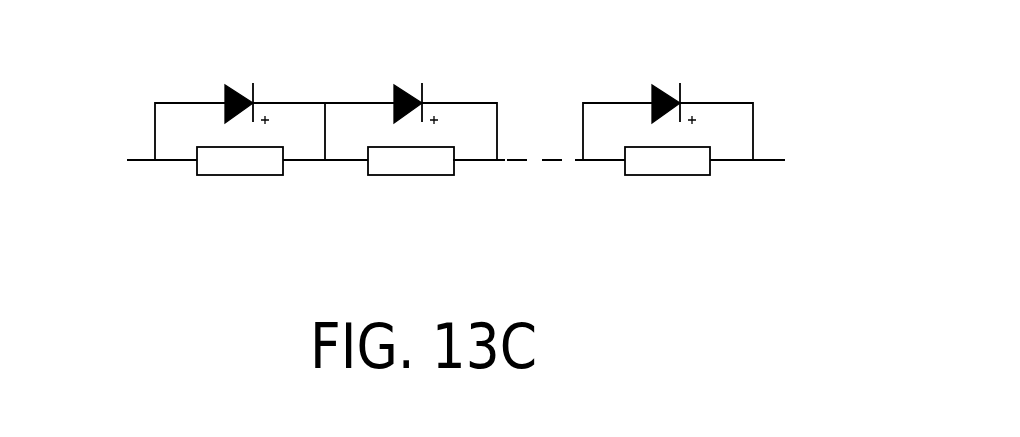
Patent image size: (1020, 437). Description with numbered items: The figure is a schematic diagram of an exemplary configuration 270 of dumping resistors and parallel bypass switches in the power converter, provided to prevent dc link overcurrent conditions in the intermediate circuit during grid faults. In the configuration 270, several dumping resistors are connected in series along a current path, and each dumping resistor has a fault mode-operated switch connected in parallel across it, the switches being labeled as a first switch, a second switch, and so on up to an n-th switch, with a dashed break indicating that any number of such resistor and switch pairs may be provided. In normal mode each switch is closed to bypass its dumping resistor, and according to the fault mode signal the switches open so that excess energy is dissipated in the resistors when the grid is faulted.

The configuration of dumping resistors and parallel bypass switches 270 is at (122, 35).